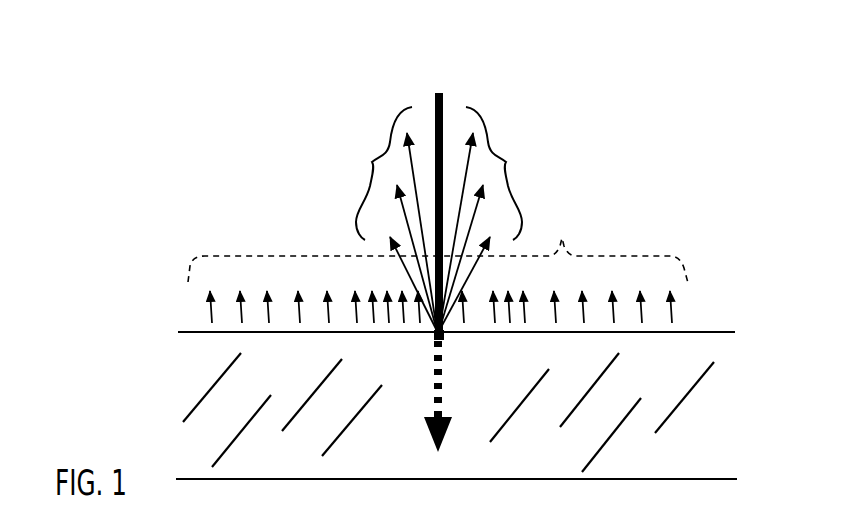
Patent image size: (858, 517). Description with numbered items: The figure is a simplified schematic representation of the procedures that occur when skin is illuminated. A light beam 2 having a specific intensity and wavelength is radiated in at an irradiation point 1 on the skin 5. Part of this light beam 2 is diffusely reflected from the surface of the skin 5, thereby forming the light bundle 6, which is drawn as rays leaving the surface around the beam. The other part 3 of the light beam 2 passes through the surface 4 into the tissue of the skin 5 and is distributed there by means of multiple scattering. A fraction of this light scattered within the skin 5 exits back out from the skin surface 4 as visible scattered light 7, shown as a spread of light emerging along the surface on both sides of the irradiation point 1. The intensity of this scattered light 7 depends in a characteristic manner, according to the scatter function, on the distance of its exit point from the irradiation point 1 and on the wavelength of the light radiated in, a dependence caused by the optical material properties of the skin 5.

The irradiation point 1 is at (451, 344).
The light beam 2 is at (439, 73).
The other part of the light beam 3 is at (431, 452).
The skin surface 4 is at (741, 332).
The skin 5 is at (167, 391).
The light bundle 6 is at (440, 219).
The scattered light 7 is at (438, 262).